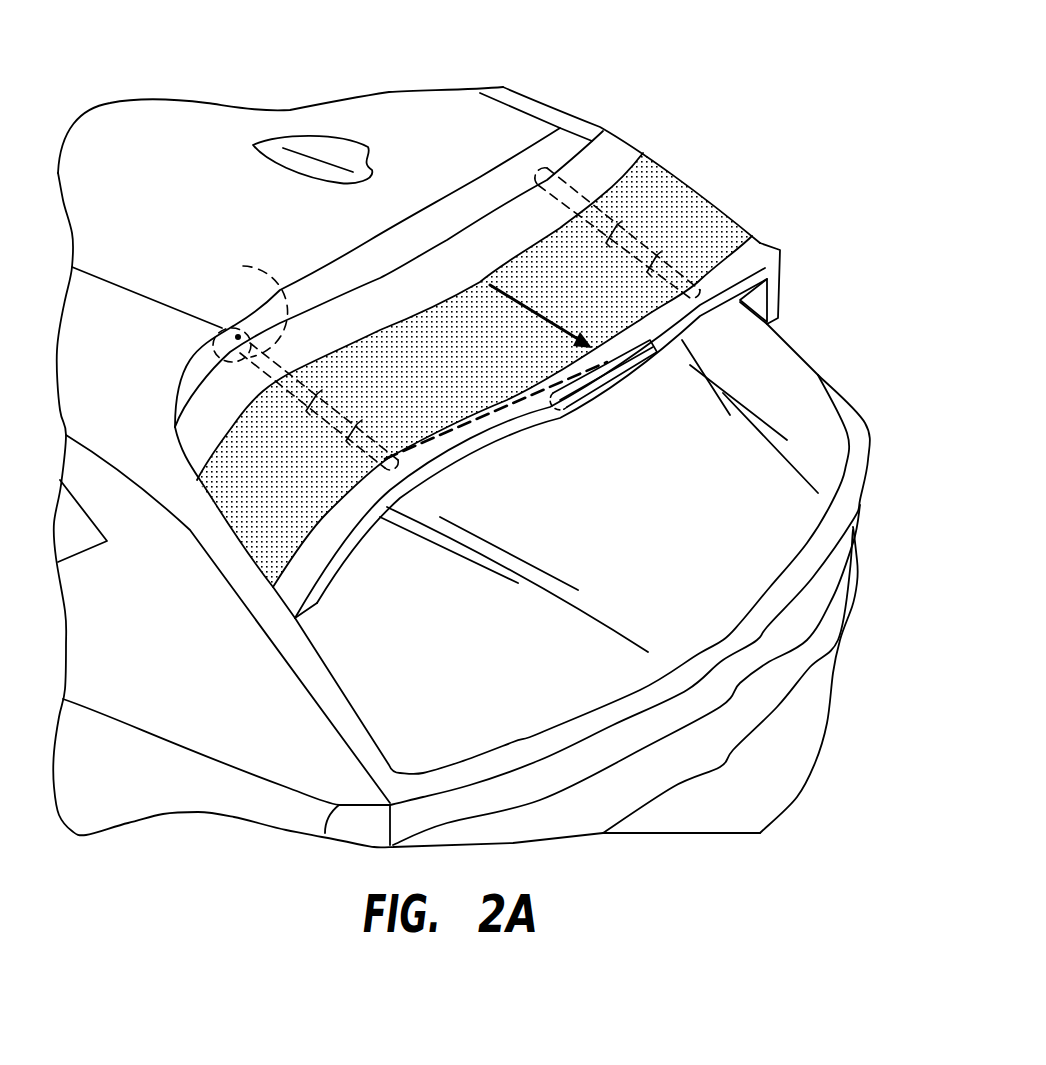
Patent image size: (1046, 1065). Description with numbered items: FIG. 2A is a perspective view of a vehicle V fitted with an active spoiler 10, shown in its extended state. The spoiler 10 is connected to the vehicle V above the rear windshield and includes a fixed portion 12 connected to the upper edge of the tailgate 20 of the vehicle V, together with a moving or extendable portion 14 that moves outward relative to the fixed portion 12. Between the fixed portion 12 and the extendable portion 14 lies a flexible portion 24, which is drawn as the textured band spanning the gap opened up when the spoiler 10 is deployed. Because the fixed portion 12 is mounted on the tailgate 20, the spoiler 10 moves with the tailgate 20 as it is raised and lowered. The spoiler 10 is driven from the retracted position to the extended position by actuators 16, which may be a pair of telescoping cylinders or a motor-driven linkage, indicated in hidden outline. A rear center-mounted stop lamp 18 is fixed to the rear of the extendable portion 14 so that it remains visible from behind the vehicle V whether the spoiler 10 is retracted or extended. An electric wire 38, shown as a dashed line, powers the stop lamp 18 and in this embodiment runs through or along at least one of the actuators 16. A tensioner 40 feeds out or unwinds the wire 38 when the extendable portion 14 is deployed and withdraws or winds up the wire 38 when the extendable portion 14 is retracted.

The vehicle V is at (141, 75).
The active spoiler 10 is at (714, 116).
The fixed portion 12 is at (622, 150).
The extendable portion 14 is at (762, 247).
The actuators 16 is at (257, 263).
The rear center-mounted stop lamp 18 is at (612, 383).
The tailgate 20 is at (575, 137).
The flexible portion 24 is at (692, 207).
The electric wire 38 is at (450, 433).
The tensioner 40 is at (205, 356).